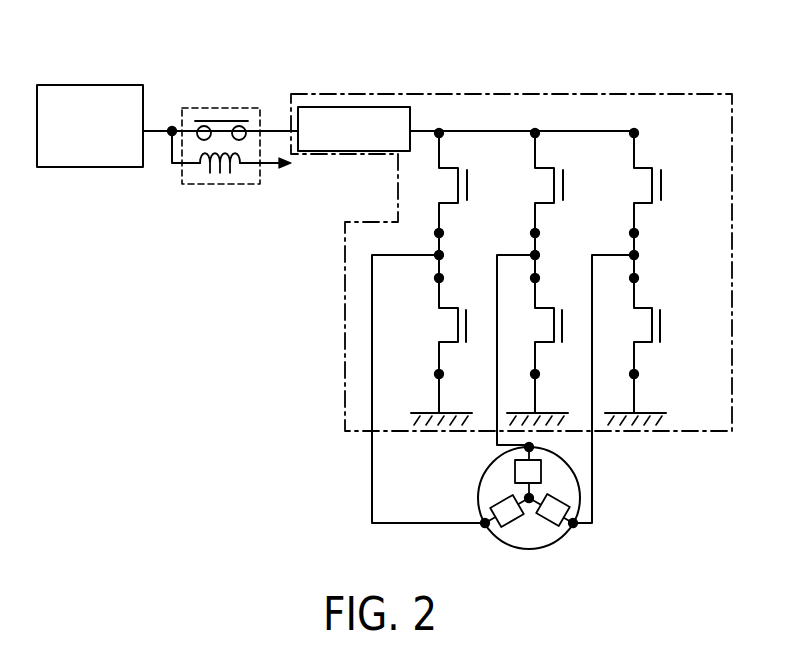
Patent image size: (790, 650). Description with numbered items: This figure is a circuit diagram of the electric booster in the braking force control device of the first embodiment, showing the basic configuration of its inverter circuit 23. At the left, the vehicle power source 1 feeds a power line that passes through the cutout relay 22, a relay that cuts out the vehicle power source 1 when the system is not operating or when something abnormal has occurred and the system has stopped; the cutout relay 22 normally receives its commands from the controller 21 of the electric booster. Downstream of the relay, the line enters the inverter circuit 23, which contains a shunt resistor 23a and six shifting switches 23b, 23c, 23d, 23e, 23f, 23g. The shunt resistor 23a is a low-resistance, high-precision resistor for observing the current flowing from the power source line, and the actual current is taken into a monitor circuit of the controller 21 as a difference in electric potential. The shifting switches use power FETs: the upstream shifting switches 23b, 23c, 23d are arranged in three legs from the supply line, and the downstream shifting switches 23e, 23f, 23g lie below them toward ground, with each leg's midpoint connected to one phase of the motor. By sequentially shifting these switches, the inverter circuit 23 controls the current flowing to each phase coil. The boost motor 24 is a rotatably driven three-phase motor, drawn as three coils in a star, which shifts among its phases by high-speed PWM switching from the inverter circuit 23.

The vehicle power source 1 is at (97, 84).
The controller 21 is at (307, 184).
The cutout relay 22 is at (227, 107).
The inverter circuit 23 is at (450, 93).
The shunt resistor 23a is at (370, 107).
The shifting switch 23b is at (470, 185).
The shifting switch 23c is at (566, 185).
The shifting switch 23d is at (664, 185).
The shifting switch 23e is at (446, 303).
The shifting switch 23f is at (542, 303).
The shifting switch 23g is at (634, 305).
The boost motor 24 is at (478, 498).